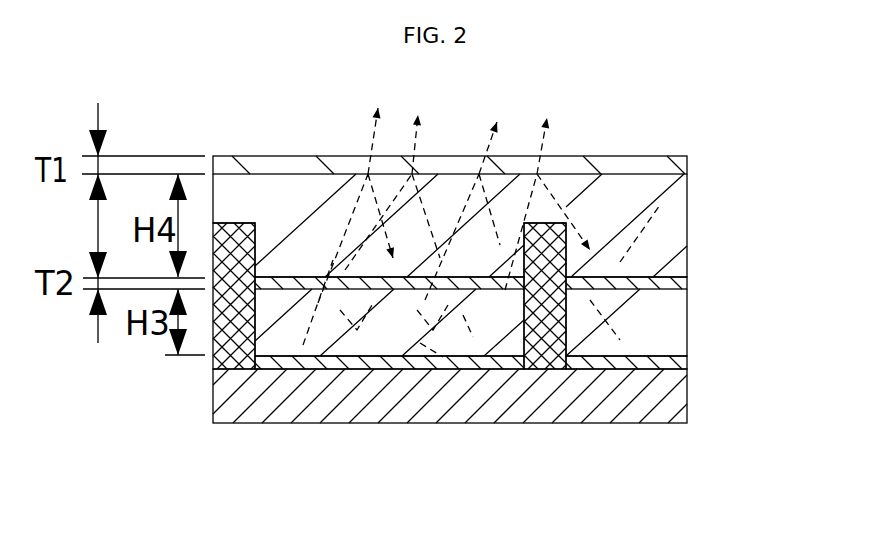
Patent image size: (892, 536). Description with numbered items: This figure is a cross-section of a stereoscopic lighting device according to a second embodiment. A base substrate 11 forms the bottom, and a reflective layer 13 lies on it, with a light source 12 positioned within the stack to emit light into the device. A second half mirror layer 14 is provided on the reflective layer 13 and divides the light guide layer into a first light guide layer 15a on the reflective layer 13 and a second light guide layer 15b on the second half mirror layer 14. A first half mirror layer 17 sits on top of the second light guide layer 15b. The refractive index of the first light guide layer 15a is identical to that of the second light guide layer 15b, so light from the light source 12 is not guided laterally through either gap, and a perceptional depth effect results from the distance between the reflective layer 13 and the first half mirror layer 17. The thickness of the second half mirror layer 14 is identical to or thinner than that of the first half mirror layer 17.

The base substrate 11 is at (688, 395).
The light source 12 is at (251, 370).
The reflective layer 13 is at (688, 358).
The second half mirror layer 14 is at (688, 277).
The first light guide layer 15a is at (677, 328).
The second light guide layer 15b is at (668, 237).
The first half mirror layer 17 is at (687, 158).